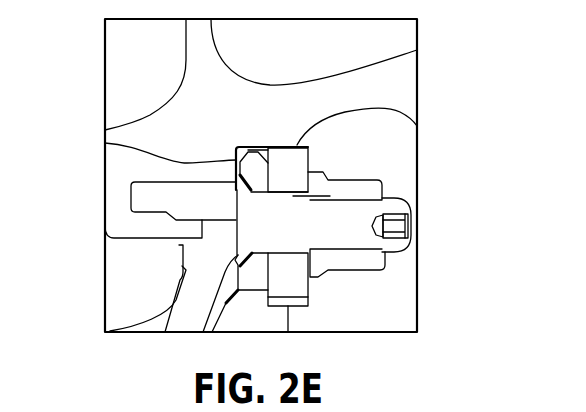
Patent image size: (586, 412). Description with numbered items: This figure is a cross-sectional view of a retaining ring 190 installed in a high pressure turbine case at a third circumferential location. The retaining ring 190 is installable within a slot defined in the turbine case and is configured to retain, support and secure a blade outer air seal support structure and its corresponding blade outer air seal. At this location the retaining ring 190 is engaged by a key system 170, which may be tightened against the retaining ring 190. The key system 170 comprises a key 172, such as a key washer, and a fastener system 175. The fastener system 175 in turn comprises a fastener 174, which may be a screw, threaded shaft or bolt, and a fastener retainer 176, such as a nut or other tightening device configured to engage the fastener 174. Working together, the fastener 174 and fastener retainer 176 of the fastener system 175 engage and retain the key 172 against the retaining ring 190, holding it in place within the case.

The key system 170 is at (402, 143).
The key 172 is at (310, 300).
The fastener 174 is at (405, 250).
The fastener system 175 is at (377, 290).
The fastener retainer 176 is at (386, 258).
The retaining ring 190 is at (105, 143).